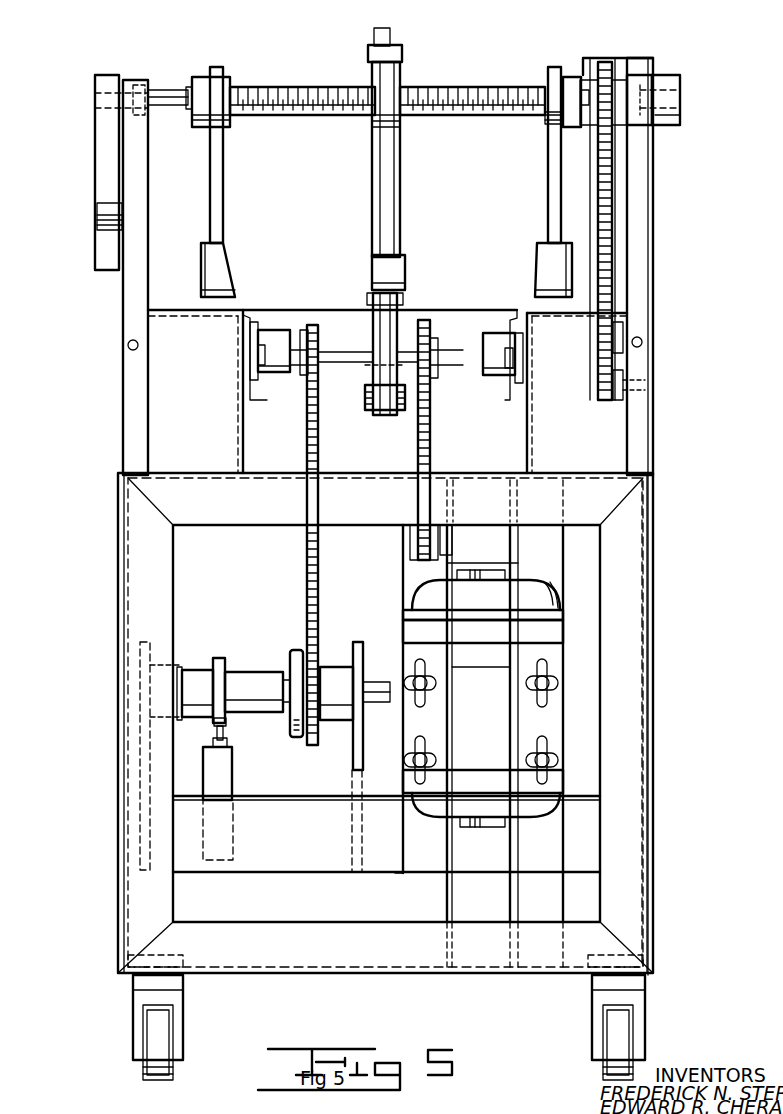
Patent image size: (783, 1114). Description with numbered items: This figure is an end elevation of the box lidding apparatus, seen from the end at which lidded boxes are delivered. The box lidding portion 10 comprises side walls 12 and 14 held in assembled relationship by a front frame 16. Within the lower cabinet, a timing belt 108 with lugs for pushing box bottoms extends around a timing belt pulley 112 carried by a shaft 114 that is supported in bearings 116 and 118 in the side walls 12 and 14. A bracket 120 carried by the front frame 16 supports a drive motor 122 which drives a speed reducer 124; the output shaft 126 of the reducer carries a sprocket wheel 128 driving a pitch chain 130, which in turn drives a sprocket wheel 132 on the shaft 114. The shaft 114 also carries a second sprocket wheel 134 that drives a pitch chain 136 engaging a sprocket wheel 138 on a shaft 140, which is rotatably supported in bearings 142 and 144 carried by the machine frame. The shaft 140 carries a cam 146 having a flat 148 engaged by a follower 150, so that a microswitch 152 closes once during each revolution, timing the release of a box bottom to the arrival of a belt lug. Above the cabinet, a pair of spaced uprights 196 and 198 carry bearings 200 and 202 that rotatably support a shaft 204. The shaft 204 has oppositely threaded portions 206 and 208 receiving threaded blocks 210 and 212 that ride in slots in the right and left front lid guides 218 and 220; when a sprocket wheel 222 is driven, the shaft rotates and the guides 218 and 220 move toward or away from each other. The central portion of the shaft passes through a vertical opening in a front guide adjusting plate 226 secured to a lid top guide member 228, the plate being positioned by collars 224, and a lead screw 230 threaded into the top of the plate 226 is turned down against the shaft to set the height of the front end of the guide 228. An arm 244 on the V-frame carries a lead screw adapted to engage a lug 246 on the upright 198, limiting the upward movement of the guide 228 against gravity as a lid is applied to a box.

The box lidding portion 10 is at (721, 116).
The side wall 12 is at (588, 450).
The side wall 14 is at (235, 455).
The front frame 16 is at (645, 795).
The timing belt 108 is at (385, 405).
The timing belt pulley 112 is at (377, 410).
The shaft 114 is at (447, 365).
The bearing 116 is at (470, 333).
The bearing 118 is at (283, 335).
The bracket 120 is at (520, 867).
The drive motor 122 is at (550, 590).
The speed reducer 124 is at (510, 555).
The output shaft 126 is at (430, 520).
The sprocket wheel 128 is at (415, 565).
The pitch chain 130 is at (415, 430).
The sprocket wheel 132 is at (417, 310).
The second sprocket wheel 134 is at (318, 375).
The pitch chain 136 is at (318, 610).
The sprocket wheel 138 is at (312, 760).
The shaft 140 is at (285, 672).
The bearing 142 is at (185, 670).
The bearing 144 is at (338, 672).
The cam 146 is at (222, 665).
The flat 148 is at (226, 722).
The follower 150 is at (230, 745).
The microswitch 152 is at (232, 782).
The upright 196 is at (653, 292).
The upright 198 is at (128, 286).
The bearing 200 is at (660, 80).
The bearing 202 is at (140, 84).
The shaft 204 is at (170, 90).
The threaded portion 206 is at (482, 88).
The threaded portion 208 is at (305, 88).
The threaded block 210 is at (545, 130).
The threaded block 212 is at (234, 128).
The right front lid guide 218 is at (553, 205).
The left front lid guide 220 is at (223, 228).
The sprocket wheel 222 is at (605, 60).
The collar 224 is at (402, 72).
The front guide adjusting plate 226 is at (395, 205).
The lid top guide member 228 is at (400, 268).
The lead screw 230 is at (398, 36).
The arm 244 is at (100, 155).
The lug 246 is at (97, 228).